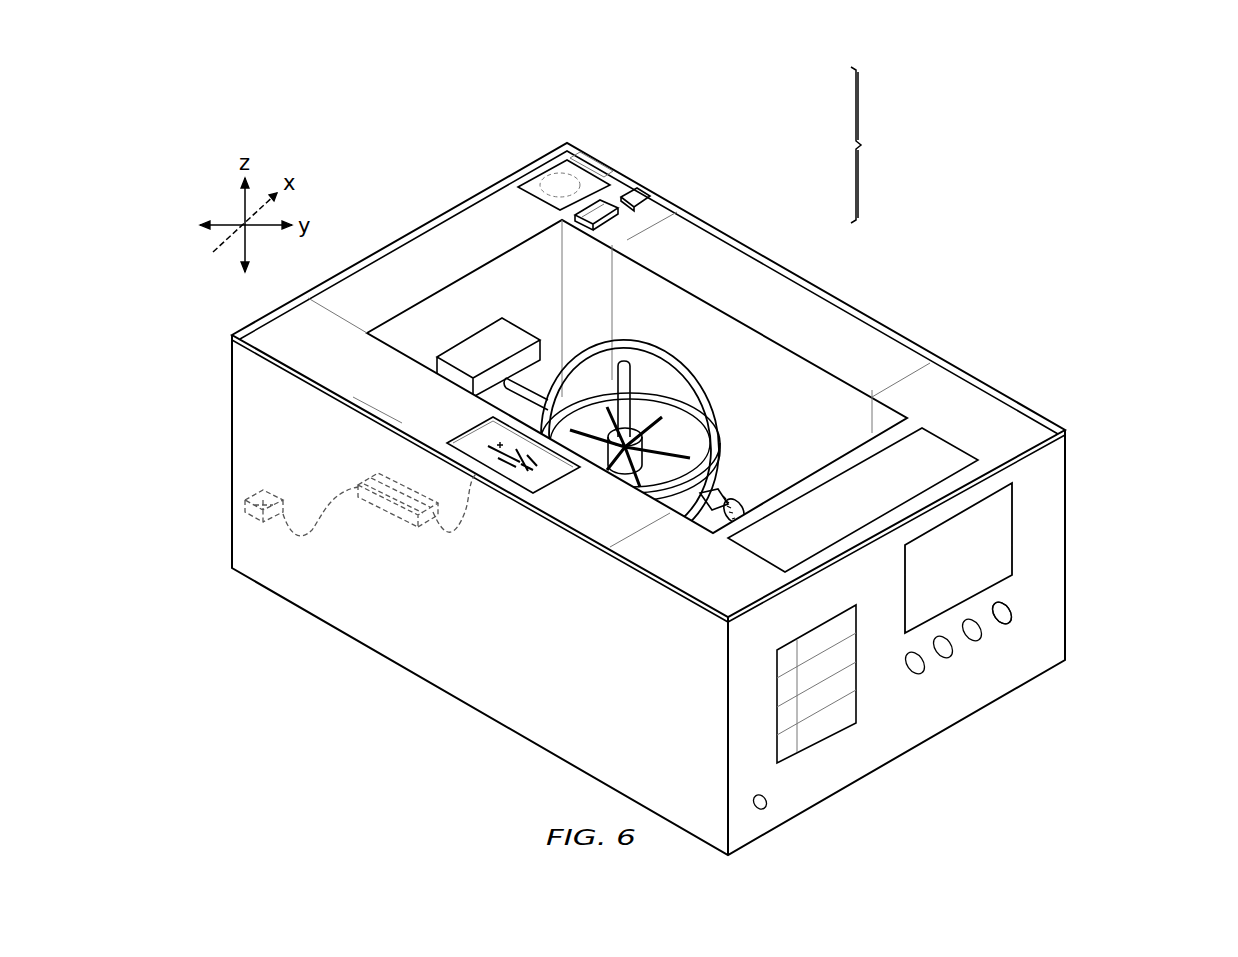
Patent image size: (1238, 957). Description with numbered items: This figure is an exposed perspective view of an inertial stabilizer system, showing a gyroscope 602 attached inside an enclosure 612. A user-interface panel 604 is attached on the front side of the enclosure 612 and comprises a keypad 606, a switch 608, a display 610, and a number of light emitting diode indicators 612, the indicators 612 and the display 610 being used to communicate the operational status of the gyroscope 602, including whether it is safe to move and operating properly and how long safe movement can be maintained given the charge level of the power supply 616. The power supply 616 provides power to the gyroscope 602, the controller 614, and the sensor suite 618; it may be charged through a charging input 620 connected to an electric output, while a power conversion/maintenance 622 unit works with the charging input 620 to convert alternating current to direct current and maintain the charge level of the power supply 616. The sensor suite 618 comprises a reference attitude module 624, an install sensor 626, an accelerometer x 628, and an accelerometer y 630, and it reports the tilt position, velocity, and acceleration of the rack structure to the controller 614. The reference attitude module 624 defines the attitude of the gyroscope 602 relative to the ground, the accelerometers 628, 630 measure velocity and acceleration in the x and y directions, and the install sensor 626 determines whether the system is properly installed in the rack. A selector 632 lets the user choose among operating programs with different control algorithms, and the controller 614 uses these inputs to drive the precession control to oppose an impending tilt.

The gyroscope 602 is at (693, 378).
The user-interface panel 604 is at (880, 755).
The keypad 606 is at (845, 680).
The switch 608 is at (767, 800).
The display 610 is at (1003, 525).
The enclosure 612 is at (983, 728).
The controller 614 is at (840, 487).
The power supply 616 is at (533, 477).
The sensor suite 618 is at (919, 145).
The charging input 620 is at (257, 517).
The power conversion/maintenance 622 is at (392, 510).
The reference attitude module 624 is at (533, 189).
The install sensor 626 is at (645, 197).
The accelerometer x 628 is at (583, 160).
The accelerometer y 630 is at (600, 200).
The selector 632 is at (1012, 612).